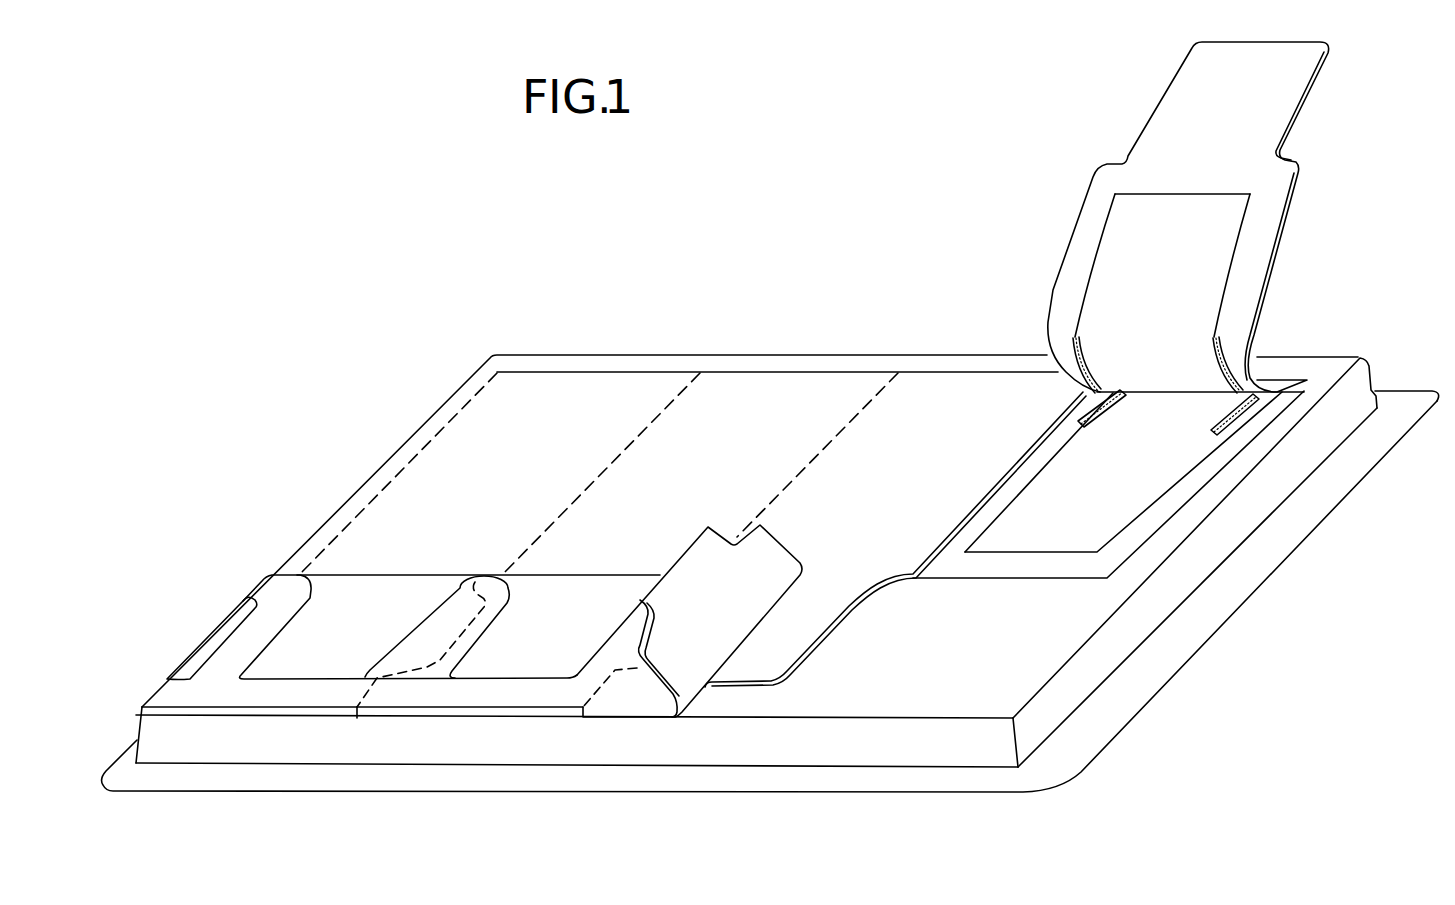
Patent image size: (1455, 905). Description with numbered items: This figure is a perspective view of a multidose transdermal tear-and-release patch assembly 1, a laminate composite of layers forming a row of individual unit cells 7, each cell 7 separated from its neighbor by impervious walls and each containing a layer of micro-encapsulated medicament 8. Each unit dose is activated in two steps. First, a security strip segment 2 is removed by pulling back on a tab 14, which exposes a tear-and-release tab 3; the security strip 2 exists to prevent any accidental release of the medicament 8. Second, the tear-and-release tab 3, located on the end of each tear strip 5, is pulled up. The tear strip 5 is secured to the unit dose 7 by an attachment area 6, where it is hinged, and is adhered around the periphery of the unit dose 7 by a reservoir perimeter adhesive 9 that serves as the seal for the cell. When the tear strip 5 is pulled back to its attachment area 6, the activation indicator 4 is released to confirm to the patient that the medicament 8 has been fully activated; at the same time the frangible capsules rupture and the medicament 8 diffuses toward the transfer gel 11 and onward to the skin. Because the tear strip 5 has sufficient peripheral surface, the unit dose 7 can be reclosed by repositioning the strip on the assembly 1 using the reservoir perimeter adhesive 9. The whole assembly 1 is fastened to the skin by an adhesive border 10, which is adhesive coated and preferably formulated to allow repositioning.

The multidose transdermal tear-and-release patch assembly 1 is at (387, 317).
The security strip segment 2 is at (317, 693).
The tear-and-release tab 3 is at (770, 647).
The activation indicator 4 is at (1207, 345).
The tear strip 5 is at (870, 503).
The attachment area 6 is at (582, 358).
The unit cell 7 is at (1097, 507).
The micro-encapsulated medicament 8 is at (1178, 432).
The reservoir perimeter adhesive 9 is at (1237, 380).
The adhesive border 10 is at (1400, 418).
The transfer gel 11 is at (217, 733).
The tab 14 is at (685, 580).